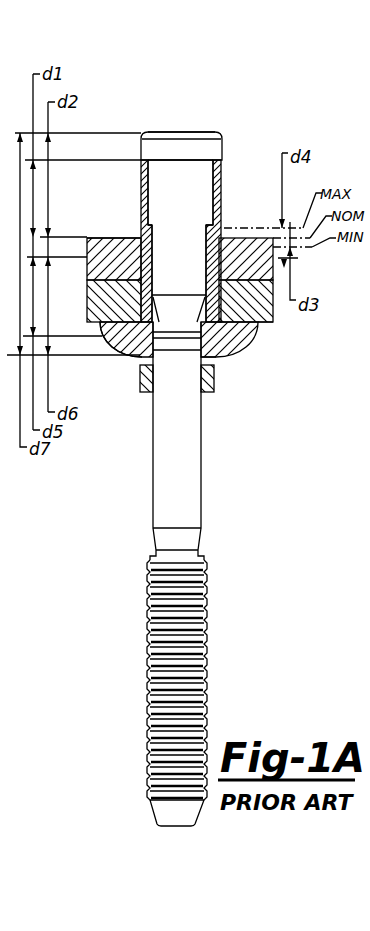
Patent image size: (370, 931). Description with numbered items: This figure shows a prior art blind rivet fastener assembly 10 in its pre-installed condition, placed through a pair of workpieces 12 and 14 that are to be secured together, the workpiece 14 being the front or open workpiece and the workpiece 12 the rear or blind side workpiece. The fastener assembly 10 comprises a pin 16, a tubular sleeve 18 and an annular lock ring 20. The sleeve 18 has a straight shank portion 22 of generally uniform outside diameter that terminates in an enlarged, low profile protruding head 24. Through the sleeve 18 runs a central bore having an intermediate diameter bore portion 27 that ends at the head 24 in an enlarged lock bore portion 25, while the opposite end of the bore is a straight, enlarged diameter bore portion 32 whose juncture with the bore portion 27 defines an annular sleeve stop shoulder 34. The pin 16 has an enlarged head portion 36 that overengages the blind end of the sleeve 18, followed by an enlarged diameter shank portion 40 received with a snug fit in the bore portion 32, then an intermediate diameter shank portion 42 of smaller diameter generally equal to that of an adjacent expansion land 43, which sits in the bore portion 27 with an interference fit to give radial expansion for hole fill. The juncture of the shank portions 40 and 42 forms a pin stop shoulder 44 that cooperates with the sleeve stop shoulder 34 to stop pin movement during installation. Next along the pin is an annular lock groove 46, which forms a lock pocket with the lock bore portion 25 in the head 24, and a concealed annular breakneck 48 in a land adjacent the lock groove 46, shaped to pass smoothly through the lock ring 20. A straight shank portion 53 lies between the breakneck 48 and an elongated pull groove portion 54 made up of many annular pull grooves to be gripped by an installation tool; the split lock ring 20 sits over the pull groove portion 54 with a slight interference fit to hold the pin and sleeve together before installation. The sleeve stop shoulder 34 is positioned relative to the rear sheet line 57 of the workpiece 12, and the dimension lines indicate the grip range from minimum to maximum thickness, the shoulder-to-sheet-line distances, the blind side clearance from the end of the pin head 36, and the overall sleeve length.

The fastener assembly 10 is at (139, 433).
The workpiece 12 is at (90, 270).
The workpiece 14 is at (90, 306).
The pin 16 is at (186, 211).
The tubular sleeve 18 is at (221, 197).
The lock ring 20 is at (214, 392).
The shank portion 22 is at (141, 197).
The protruding head 24 is at (196, 357).
The lock bore portion 25 is at (215, 358).
The intermediate diameter bore portion 27 is at (161, 293).
The enlarged diameter bore portion 32 is at (148, 172).
The sleeve stop shoulder 34 is at (150, 248).
The head portion 36 is at (186, 132).
The enlarged diameter shank portion 40 is at (198, 186).
The intermediate diameter shank portion 42 is at (190, 269).
The expansion land 43 is at (135, 356).
The pin stop shoulder 44 is at (158, 224).
The lock groove 46 is at (172, 340).
The breakneck 48 is at (258, 328).
The straight shank portion 53 is at (202, 488).
The pull groove portion 54 is at (206, 645).
The rear sheet line 57 is at (113, 238).